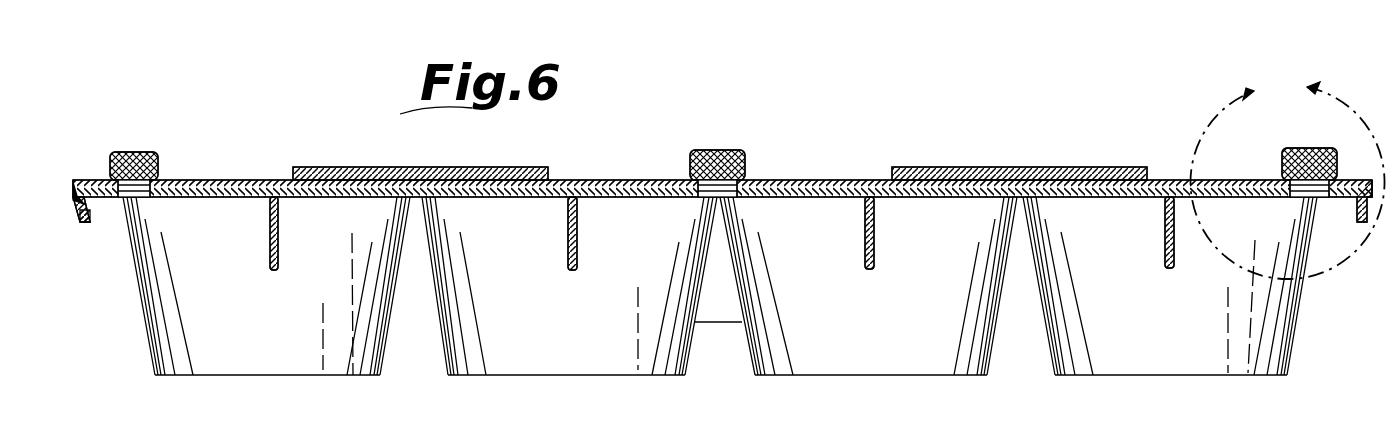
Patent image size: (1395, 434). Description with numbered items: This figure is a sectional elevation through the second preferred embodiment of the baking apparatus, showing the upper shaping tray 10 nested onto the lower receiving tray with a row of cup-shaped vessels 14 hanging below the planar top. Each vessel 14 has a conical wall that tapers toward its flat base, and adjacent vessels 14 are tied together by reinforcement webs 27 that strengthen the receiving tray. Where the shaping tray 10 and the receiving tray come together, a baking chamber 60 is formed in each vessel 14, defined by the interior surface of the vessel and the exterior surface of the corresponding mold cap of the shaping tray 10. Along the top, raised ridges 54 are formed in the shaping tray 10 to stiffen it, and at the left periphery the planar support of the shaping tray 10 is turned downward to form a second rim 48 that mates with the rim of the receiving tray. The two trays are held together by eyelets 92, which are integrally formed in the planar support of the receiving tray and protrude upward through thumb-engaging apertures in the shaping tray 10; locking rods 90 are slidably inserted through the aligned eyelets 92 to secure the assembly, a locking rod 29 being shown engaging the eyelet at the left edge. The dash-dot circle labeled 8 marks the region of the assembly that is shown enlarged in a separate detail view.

The upper shaping tray 10 is at (775, 180).
The raised ridges 54 is at (980, 167).
The second rim 48 is at (73, 182).
The locking rod 29 is at (73, 224).
The eyelets 92 is at (122, 152).
The locking rods 90 is at (160, 176).
The baking chamber 60 is at (258, 333).
The reinforcement webs 27 is at (720, 324).
The cup-shaped vessels 14 is at (833, 376).
The detail circle of FIG. 8 is at (1288, 175).